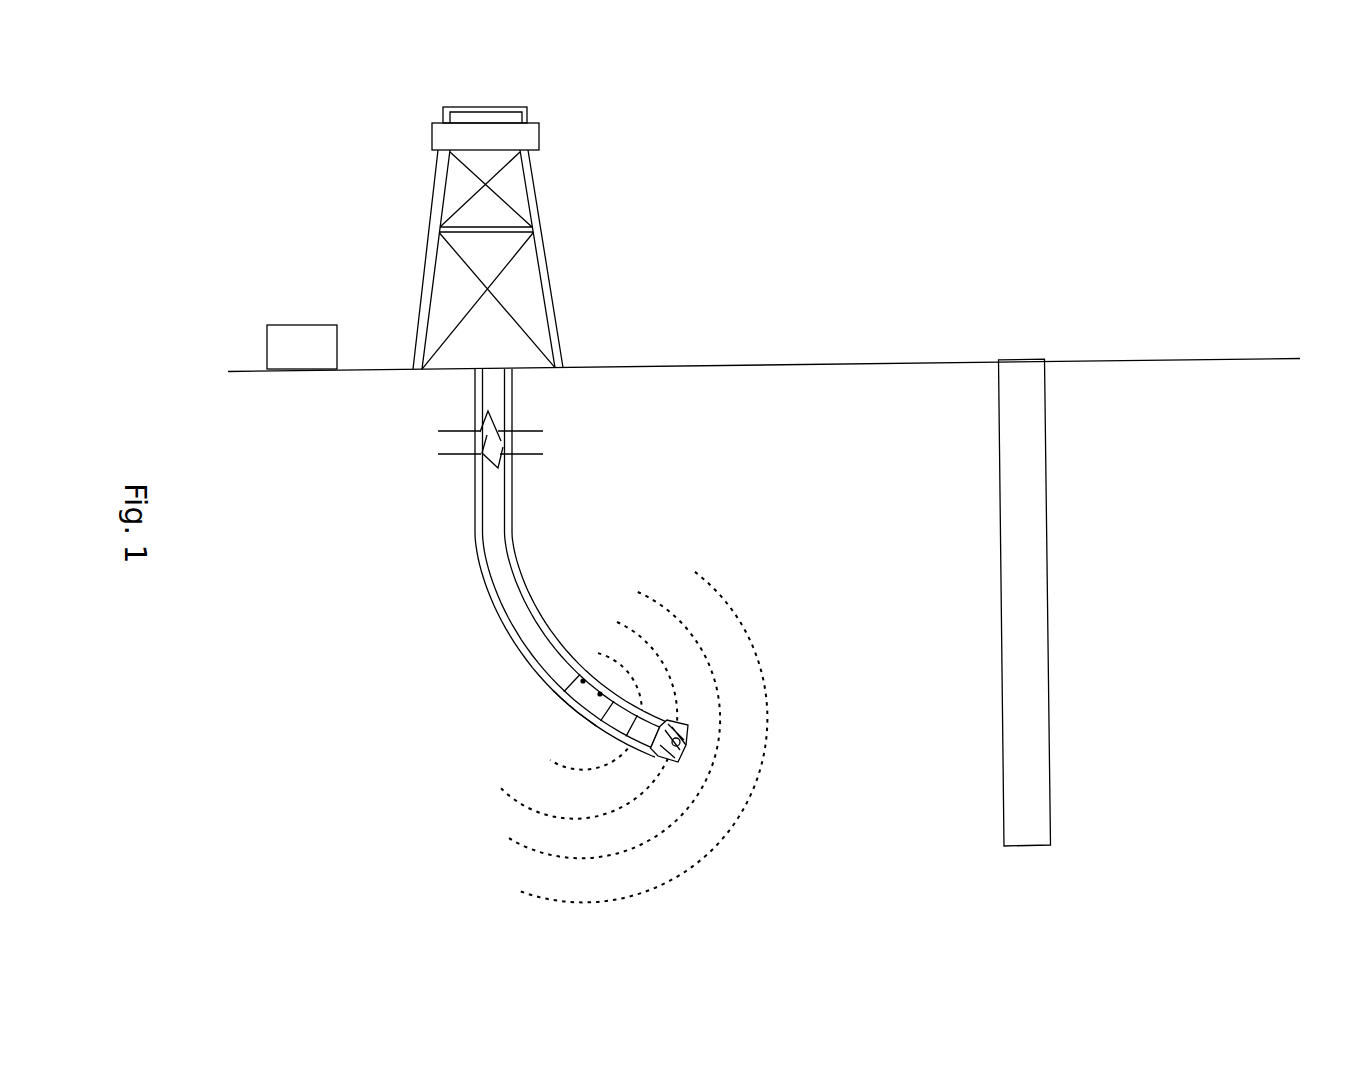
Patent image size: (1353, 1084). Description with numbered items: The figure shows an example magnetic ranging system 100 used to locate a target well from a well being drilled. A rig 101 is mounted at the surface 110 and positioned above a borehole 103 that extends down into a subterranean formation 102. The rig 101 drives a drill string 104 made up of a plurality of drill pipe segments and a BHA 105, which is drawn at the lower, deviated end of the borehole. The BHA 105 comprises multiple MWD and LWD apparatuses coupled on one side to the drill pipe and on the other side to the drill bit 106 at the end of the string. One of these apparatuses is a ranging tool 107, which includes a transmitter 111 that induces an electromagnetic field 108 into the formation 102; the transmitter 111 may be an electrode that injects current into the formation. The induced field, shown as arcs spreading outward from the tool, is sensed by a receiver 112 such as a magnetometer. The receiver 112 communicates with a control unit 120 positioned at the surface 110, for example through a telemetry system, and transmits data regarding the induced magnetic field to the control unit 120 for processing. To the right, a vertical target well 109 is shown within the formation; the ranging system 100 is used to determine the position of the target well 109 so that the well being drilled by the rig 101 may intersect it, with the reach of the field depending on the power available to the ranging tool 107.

The magnetic ranging system 100 is at (606, 208).
The rig 101 is at (528, 112).
The subterranean formation 102 is at (699, 456).
The borehole 103 is at (507, 417).
The drill string 104 is at (507, 537).
The BHA 105 is at (585, 741).
The drill bit 106 is at (681, 727).
The ranging tool 107 is at (578, 713).
The electromagnetic field 108 is at (615, 612).
The target well 109 is at (1000, 706).
The surface 110 is at (668, 366).
The transmitter 111 is at (585, 679).
The receiver 112 is at (602, 692).
The control unit 120 is at (320, 357).